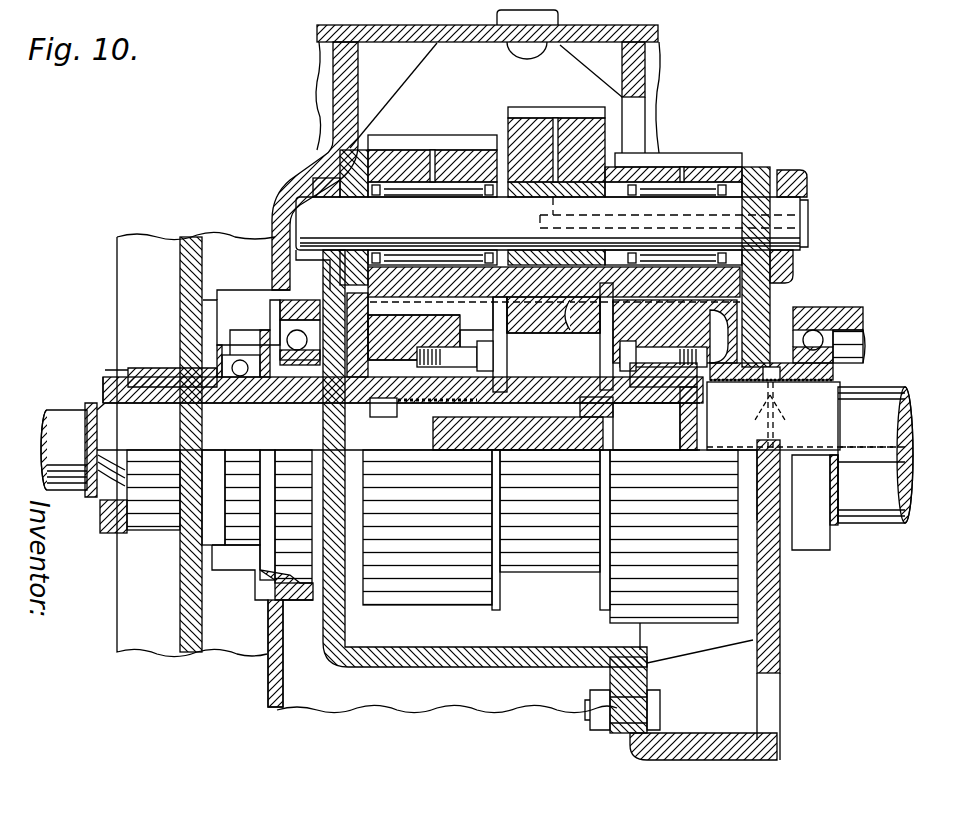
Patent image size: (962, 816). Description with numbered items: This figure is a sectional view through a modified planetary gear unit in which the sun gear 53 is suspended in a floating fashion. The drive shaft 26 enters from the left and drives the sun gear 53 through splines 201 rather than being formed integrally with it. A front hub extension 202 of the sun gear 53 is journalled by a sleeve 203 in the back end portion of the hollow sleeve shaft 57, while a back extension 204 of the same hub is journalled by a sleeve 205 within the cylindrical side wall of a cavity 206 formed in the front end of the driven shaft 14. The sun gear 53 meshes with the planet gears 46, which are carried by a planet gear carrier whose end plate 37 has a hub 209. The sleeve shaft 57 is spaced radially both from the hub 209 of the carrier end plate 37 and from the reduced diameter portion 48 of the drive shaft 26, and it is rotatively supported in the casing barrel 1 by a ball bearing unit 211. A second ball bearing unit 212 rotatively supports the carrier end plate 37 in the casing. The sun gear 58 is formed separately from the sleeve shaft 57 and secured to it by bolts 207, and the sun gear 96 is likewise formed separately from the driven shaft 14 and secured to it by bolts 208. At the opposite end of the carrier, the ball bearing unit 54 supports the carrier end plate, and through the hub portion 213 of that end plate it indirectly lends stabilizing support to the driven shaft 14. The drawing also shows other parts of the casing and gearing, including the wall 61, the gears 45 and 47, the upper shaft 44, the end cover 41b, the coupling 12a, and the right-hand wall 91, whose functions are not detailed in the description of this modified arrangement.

The casing barrel 1 is at (330, 62).
The wall 61 is at (194, 236).
The gear 45 is at (430, 140).
The planet gears 46 is at (549, 110).
The gear 47 is at (697, 160).
The countershaft 44 is at (800, 212).
The end cover 41b is at (772, 297).
The ball bearing unit 54 is at (832, 320).
The hub portion 213 is at (845, 370).
The drive shaft 26 is at (65, 412).
The reduced diameter portion 48 is at (398, 444).
The sleeve shaft 57 is at (283, 398).
The hub 209 is at (357, 370).
The sleeve 203 is at (395, 408).
The front hub extension 202 is at (425, 410).
The bolts 207 is at (420, 355).
The splines 201 is at (518, 415).
The second ball bearing unit 212 is at (295, 325).
The ball bearing unit 211 is at (262, 345).
The coupling 12a is at (803, 416).
The bolts 208 is at (710, 380).
The cavity 206 is at (668, 408).
The back extension 204 is at (621, 410).
The sleeve 205 is at (672, 410).
The driven shaft 14 is at (902, 424).
The sun gear 58 is at (447, 600).
The sun gear 53 is at (560, 572).
The sun gear 96 is at (620, 590).
The planet gear carrier end plate 37 is at (345, 652).
The housing wall 91 is at (782, 656).